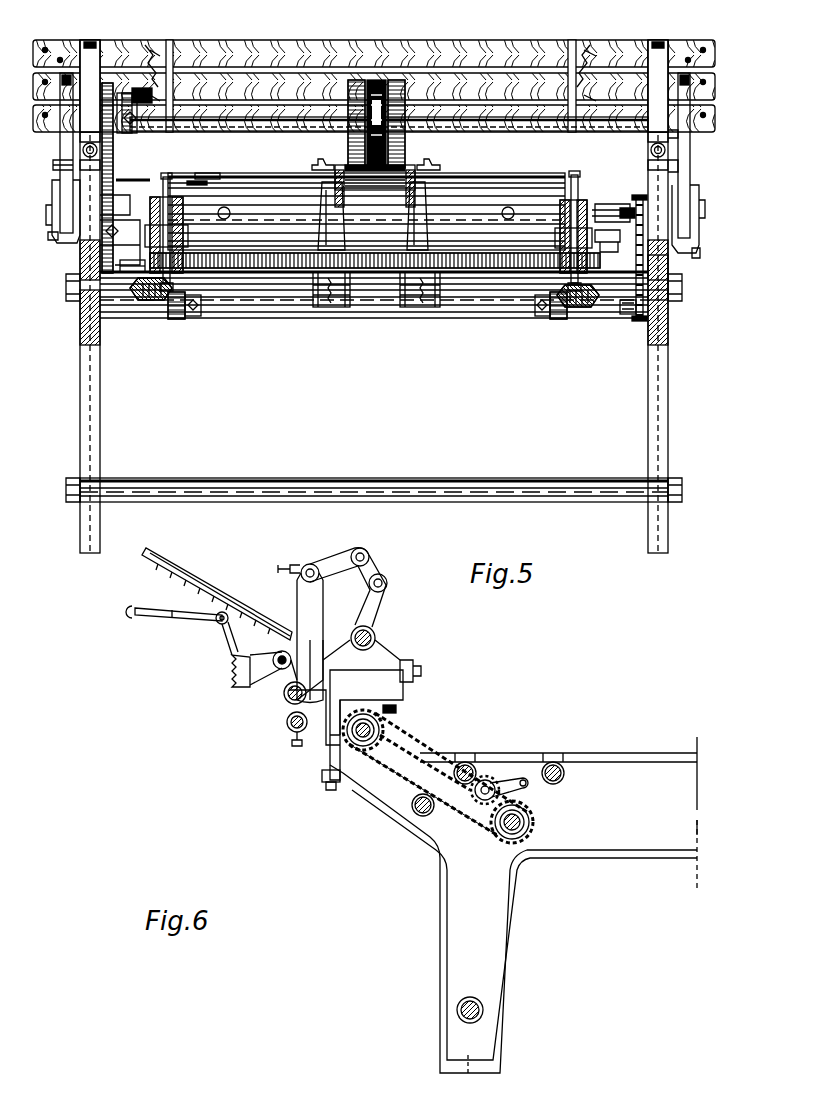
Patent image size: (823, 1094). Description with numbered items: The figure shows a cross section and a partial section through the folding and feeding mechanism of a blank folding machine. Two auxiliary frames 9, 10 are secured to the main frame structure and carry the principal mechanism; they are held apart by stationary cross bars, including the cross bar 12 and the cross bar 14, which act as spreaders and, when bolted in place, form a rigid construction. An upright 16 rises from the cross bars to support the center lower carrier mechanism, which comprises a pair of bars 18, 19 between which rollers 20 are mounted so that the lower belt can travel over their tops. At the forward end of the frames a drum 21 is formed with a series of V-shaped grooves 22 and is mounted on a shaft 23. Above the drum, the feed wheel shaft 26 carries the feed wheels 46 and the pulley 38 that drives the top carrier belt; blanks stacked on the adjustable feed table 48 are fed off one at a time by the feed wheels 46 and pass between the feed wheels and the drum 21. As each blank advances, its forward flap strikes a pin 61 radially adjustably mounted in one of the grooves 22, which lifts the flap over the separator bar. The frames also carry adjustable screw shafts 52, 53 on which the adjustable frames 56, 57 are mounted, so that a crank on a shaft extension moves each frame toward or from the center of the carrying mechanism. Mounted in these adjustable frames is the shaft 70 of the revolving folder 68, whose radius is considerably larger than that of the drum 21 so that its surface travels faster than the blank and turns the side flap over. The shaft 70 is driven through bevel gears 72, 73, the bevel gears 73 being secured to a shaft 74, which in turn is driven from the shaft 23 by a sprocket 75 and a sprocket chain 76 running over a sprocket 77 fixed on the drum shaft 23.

In FIG. 5, the auxiliary frame 9 is at (80, 398).
In FIG. 6, the auxiliary frame 9 is at (488, 950).
In FIG. 5, the auxiliary frame 10 is at (668, 398).
In FIG. 5, the cross bar 12 is at (490, 285).
In FIG. 5, the cross bar 14 is at (382, 478).
In FIG. 6, the cross bar 14 is at (456, 1012).
In FIG. 5, the upright 16 is at (330, 262).
In FIG. 5, the bar 18 is at (330, 176).
In FIG. 5, the bar 19 is at (430, 200).
In FIG. 5, the roller 20 is at (402, 180).
In FIG. 5, the drum 21 is at (245, 176).
In FIG. 5, the V-shaped groove 22 is at (447, 283).
In FIG. 5, the shaft 23 is at (648, 220).
In FIG. 6, the shaft 23 is at (400, 720).
In FIG. 5, the feed wheel shaft 26 is at (482, 122).
In FIG. 6, the feed wheel shaft 26 is at (376, 640).
In FIG. 5, the pulley 38 is at (378, 80).
In FIG. 5, the feed wheel 46 is at (358, 80).
In FIG. 6, the adjustable feed table 48 is at (200, 580).
In FIG. 6, the screw shaft 52 is at (558, 762).
In FIG. 6, the screw shaft 53 is at (467, 762).
In FIG. 5, the adjustable frame 56 is at (150, 272).
In FIG. 5, the adjustable frame 57 is at (545, 270).
In FIG. 5, the pin 61 is at (224, 207).
In FIG. 5, the revolving folder 68 is at (166, 200).
In FIG. 5, the shaft 70 is at (178, 215).
In FIG. 5, the bevel gear 72 is at (163, 300).
In FIG. 5, the bevel gear 73 is at (180, 320).
In FIG. 5, the shaft 74 is at (262, 305).
In FIG. 6, the shaft 74 is at (530, 822).
In FIG. 5, the sprocket 75 is at (640, 322).
In FIG. 6, the sprocket 75 is at (500, 820).
In FIG. 5, the sprocket chain 76 is at (672, 280).
In FIG. 5, the sprocket 77 is at (640, 200).
In FIG. 6, the sprocket 77 is at (365, 752).